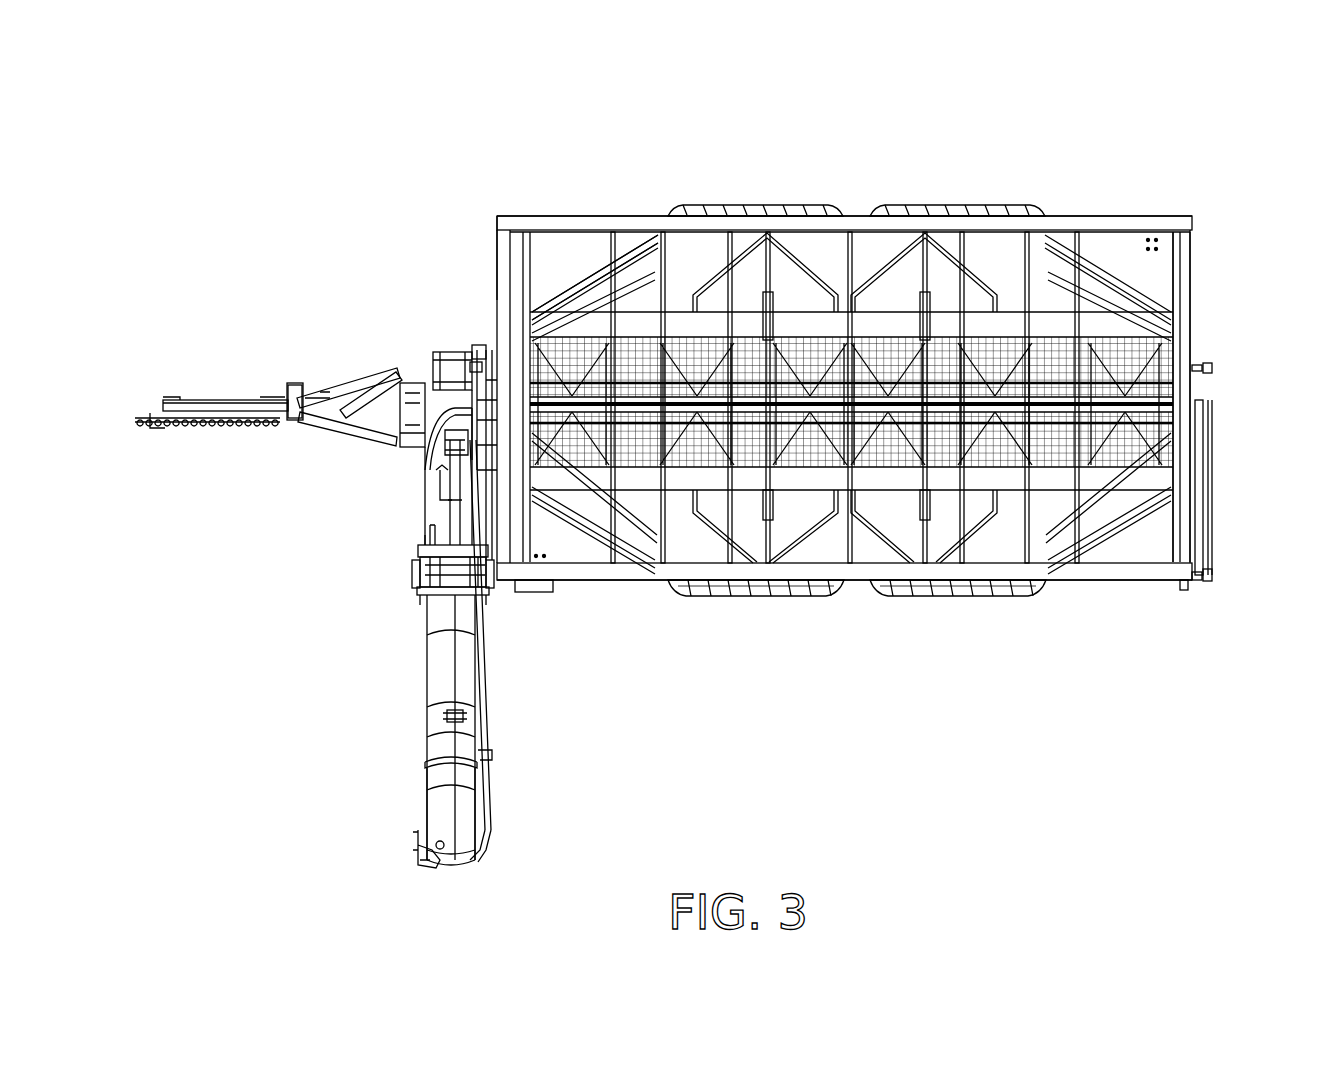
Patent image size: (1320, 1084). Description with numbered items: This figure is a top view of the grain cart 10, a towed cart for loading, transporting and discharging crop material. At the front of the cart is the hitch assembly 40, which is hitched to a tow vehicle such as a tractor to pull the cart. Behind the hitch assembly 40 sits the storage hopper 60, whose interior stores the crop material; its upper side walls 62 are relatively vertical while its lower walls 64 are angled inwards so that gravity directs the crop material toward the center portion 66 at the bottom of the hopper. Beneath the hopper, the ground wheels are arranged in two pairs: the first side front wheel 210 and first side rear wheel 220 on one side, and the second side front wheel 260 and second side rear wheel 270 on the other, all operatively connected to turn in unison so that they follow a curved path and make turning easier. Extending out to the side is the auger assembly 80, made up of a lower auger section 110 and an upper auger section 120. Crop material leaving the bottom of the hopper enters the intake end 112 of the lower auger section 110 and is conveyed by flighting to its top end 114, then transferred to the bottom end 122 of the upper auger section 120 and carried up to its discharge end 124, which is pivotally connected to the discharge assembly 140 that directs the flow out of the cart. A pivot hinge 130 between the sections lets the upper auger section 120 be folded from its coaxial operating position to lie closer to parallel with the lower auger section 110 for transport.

The grain cart 10 is at (1160, 654).
The hitch assembly 40 is at (341, 370).
The storage hopper 60 is at (598, 568).
The upper side walls 62 is at (1100, 215).
The lower walls 64 is at (1140, 282).
The center portion 66 is at (636, 333).
The auger assembly 80 is at (400, 668).
The lower auger section 110 is at (425, 500).
The intake end 112 is at (430, 375).
The top end 114 is at (418, 550).
The upper auger section 120 is at (425, 693).
The bottom end 122 is at (420, 590).
The discharge end 124 is at (478, 710).
The pivot hinge 130 is at (420, 545).
The discharge assembly 140 is at (460, 800).
The first side front wheel 210 is at (760, 208).
The first side rear wheel 220 is at (934, 208).
The second side front wheel 260 is at (763, 597).
The second side rear wheel 270 is at (960, 597).